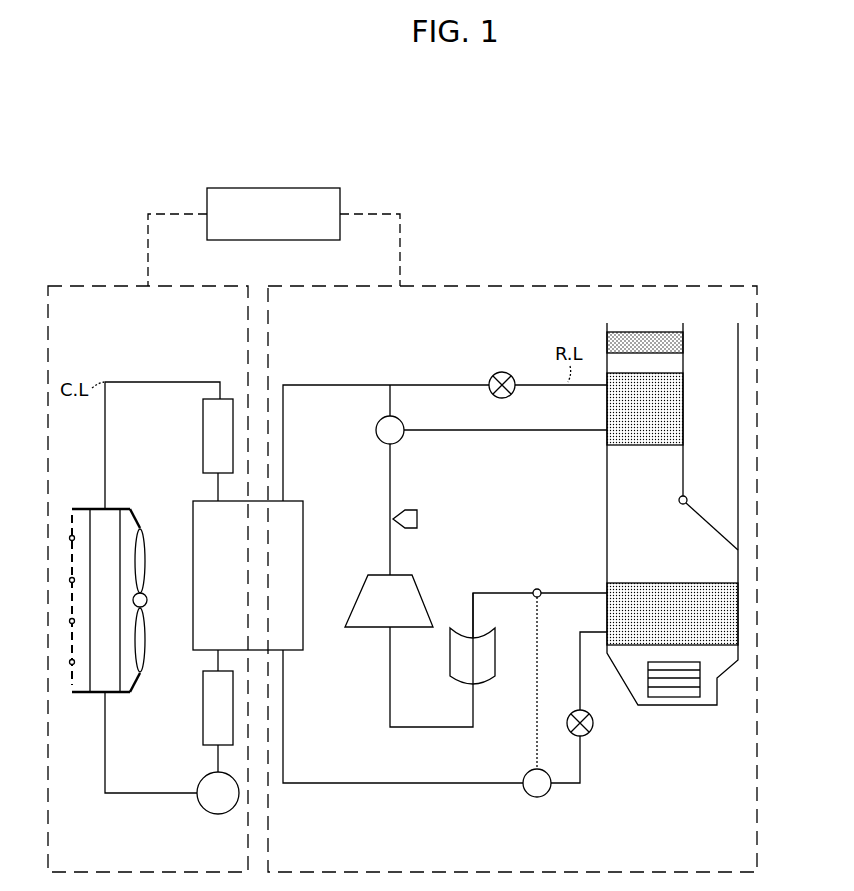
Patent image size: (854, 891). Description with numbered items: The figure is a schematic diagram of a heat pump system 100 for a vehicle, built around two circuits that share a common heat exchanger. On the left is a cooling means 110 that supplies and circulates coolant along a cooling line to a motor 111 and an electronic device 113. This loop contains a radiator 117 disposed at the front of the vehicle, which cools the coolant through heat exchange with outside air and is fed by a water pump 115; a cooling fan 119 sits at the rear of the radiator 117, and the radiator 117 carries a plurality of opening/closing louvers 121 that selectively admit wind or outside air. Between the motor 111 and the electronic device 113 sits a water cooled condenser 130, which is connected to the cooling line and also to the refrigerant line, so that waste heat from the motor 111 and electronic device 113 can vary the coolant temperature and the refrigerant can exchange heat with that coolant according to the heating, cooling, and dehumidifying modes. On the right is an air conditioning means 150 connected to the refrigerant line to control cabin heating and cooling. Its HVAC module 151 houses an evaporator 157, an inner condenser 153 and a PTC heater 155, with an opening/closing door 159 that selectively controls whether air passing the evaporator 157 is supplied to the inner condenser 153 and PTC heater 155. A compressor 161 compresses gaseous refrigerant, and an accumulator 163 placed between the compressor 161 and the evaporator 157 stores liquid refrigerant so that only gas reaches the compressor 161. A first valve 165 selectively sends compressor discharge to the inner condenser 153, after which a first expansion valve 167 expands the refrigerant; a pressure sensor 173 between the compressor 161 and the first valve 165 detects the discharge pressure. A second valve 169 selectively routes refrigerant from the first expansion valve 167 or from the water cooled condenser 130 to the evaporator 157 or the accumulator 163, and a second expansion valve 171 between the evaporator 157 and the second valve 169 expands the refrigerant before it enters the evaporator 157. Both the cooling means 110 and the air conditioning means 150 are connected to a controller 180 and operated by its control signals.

The heat pump system 100 is at (422, 92).
The cooling means 110 is at (70, 286).
The motor 111 is at (203, 450).
The electronic device 113 is at (203, 700).
The water pump 115 is at (219, 814).
The radiator 117 is at (104, 507).
The cooling fan 119 is at (147, 594).
The opening/closing louvers 121 is at (72, 668).
The water cooled condenser 130 is at (305, 508).
The air conditioning means 150 is at (625, 286).
The HVAC module 151 is at (718, 455).
The inner condenser 153 is at (684, 402).
The PTC heater 155 is at (684, 342).
The evaporator 157 is at (722, 612).
The opening/closing door 159 is at (712, 528).
The compressor 161 is at (360, 629).
The accumulator 163 is at (480, 686).
The first valve 165 is at (376, 430).
The first expansion valve 167 is at (502, 372).
The second valve 169 is at (537, 798).
The second expansion valve 171 is at (596, 723).
The pressure sensor 173 is at (419, 519).
The controller 180 is at (272, 188).